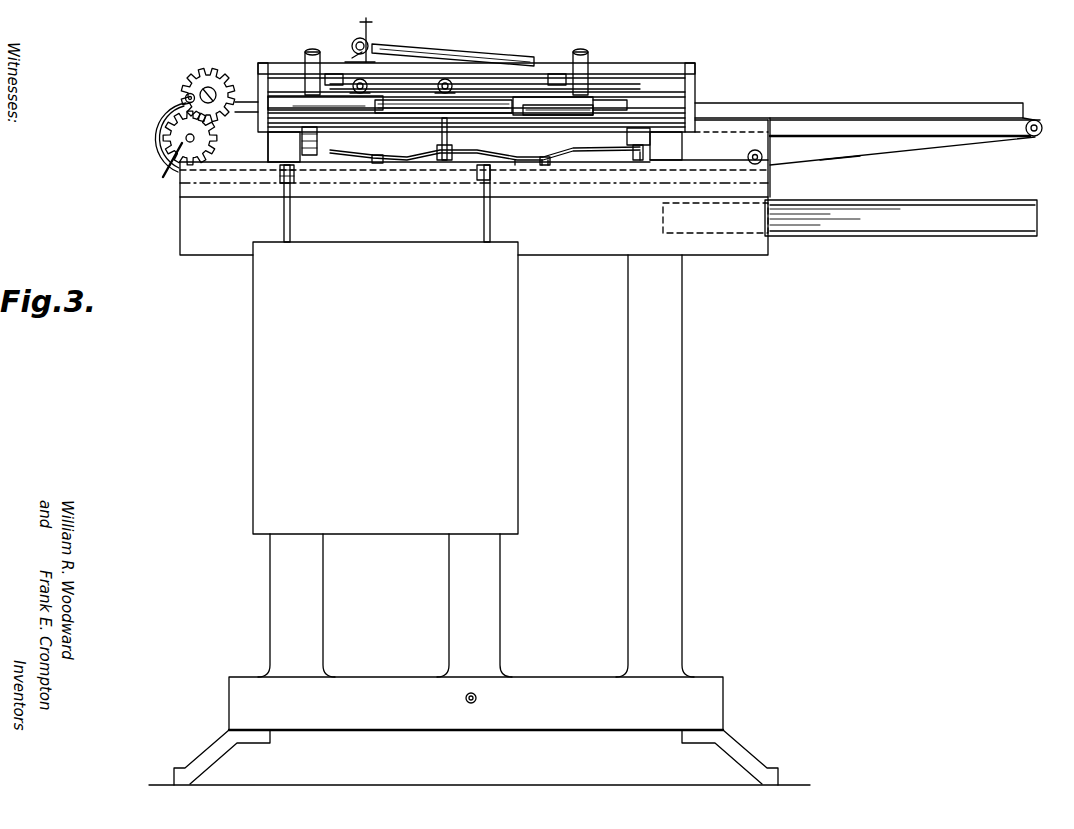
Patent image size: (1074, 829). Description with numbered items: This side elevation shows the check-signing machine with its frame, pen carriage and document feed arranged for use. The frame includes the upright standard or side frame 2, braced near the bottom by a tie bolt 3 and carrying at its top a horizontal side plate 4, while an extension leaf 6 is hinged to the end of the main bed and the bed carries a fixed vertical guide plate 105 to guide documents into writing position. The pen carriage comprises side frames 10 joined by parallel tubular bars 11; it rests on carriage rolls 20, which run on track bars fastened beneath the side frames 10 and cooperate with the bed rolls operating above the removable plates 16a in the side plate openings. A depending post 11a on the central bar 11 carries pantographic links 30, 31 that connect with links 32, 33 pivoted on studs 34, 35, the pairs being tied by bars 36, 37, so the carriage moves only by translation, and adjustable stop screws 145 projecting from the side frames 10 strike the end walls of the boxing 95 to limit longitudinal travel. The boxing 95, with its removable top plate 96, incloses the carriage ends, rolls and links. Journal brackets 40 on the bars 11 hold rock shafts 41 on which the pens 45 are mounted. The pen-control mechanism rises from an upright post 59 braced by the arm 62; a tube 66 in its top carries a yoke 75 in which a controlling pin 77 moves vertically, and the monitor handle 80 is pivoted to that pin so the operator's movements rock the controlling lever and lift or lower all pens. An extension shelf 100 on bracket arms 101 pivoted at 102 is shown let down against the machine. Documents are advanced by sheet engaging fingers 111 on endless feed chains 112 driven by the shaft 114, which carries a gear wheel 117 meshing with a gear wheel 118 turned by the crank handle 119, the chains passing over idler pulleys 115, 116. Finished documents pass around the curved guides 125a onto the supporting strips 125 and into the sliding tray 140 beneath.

The upright standard 2 is at (635, 558).
The tie bolt 3 is at (477, 698).
The horizontal side plate 4 is at (637, 122).
The extension leaf 6 is at (870, 125).
The side frame of pen carriage 10 is at (492, 108).
The tubular bar 11 is at (522, 90).
The depending post 11a is at (443, 135).
The removable plate 16a is at (345, 160).
The carriage roll 20 is at (312, 127).
The pantographic link 30 is at (470, 170).
The pantographic link 31 is at (515, 157).
The pantographic link 32 is at (376, 163).
The pantographic link 33 is at (548, 166).
The stud 34 is at (313, 156).
The stud 35 is at (640, 152).
The connecting bar 36 is at (380, 163).
The connecting bar 37 is at (542, 165).
The journal bracket 40 is at (447, 78).
The rock shaft 41 is at (490, 78).
The pen 45 is at (303, 54).
The upright post 59 is at (350, 60).
The bracing arm 62 is at (400, 96).
The tube 66 is at (370, 44).
The yoke 75 is at (355, 58).
The controlling pin 77 is at (368, 28).
The monitor handle 80 is at (434, 50).
The boxing 95 is at (258, 80).
The removable top plate 96 is at (545, 66).
The extension shelf 100 is at (385, 388).
The bracket arm 101 is at (287, 212).
The pivot 102 is at (417, 163).
The vertical guide plate 105 is at (820, 107).
The sheet engaging finger 111 is at (855, 158).
The endless feed chain 112 is at (888, 153).
The shaft 114 is at (160, 145).
The idler pulley 115 is at (748, 157).
The idler pulley 116 is at (1036, 121).
The gear wheel 117 is at (157, 164).
The gear wheel 118 is at (212, 70).
The crank handle 119 is at (185, 98).
The sheet supporting strip 125 is at (232, 173).
The guide 125a is at (172, 133).
The tray 140 is at (927, 218).
The adjustable stop screw 145 is at (295, 98).